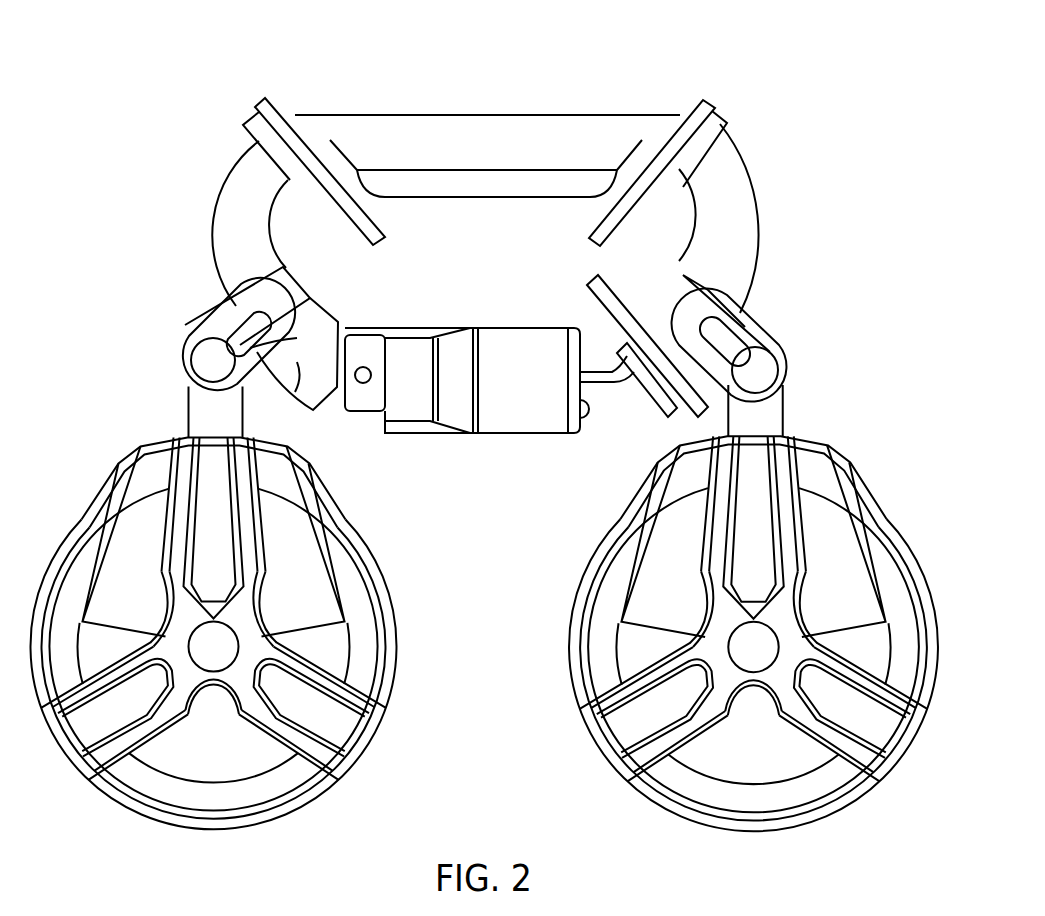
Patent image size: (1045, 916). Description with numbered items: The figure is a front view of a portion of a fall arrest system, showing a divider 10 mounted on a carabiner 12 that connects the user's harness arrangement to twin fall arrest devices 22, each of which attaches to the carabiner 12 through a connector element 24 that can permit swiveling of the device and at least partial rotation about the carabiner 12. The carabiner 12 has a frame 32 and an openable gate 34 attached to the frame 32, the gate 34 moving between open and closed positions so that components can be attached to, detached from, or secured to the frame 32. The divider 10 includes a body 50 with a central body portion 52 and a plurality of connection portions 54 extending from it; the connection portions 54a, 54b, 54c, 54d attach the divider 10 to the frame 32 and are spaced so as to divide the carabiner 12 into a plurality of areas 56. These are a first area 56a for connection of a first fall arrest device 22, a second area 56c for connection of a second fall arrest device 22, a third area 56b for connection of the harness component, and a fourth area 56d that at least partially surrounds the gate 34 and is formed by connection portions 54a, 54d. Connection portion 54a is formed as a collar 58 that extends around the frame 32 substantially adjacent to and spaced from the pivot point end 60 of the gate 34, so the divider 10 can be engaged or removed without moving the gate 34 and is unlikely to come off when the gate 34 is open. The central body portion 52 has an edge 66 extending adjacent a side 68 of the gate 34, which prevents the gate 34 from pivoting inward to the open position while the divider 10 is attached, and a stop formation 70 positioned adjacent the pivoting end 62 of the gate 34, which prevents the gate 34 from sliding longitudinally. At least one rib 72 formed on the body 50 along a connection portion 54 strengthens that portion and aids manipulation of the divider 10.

The divider 10 is at (648, 264).
The carabiner 12 is at (770, 162).
The fall arrest device 22 is at (78, 502).
The connector element 24 is at (268, 296).
The frame 32 is at (235, 165).
The gate 34 is at (492, 408).
The body 50 is at (409, 185).
The central body portion 52 is at (458, 222).
The connection portions 54 is at (255, 90).
The connection portion 54a is at (285, 390).
The connection portion 54b is at (298, 106).
The connection portion 54c is at (683, 106).
The connection portion 54d is at (650, 400).
The areas 56 is at (293, 245).
The first area 56a is at (286, 218).
The third area 56b is at (493, 183).
The second area 56c is at (670, 232).
The fourth area 56d is at (388, 380).
The collar 58 is at (215, 338).
The pivot point end 60 is at (338, 405).
The pivoting end 62 is at (578, 420).
The edge 66 is at (418, 340).
The side 68 is at (533, 330).
The stop formation 70 is at (707, 326).
The rib 72 is at (262, 92).